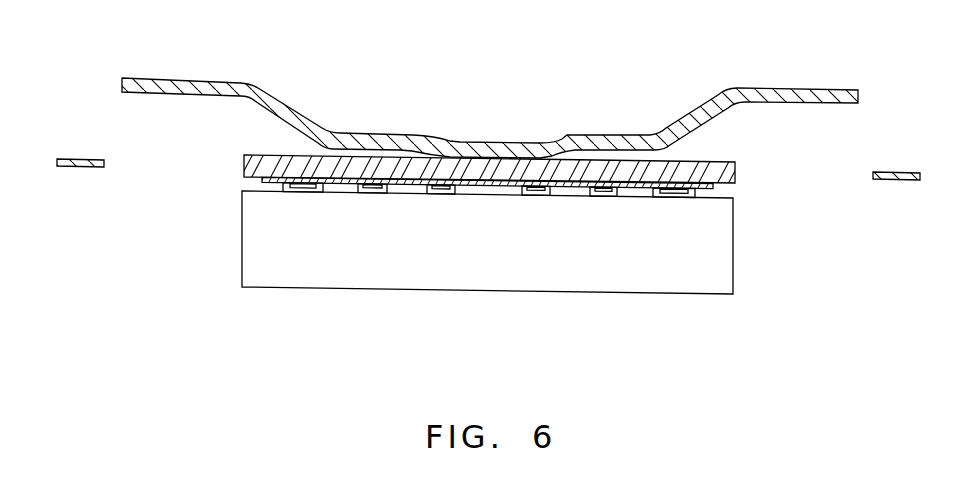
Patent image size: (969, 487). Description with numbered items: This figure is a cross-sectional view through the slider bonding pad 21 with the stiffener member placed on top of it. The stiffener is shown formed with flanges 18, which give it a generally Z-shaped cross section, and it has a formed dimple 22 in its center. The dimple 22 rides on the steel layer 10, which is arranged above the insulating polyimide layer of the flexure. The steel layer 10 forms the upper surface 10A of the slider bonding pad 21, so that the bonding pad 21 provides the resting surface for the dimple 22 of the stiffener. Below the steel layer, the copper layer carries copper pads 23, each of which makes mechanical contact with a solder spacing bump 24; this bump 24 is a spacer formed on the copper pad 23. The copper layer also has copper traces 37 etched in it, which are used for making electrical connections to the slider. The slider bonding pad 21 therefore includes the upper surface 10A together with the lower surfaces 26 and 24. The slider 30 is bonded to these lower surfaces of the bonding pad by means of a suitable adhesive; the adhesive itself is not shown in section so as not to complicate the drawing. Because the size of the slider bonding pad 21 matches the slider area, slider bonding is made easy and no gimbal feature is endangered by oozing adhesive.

The flanges 18 is at (282, 100).
The dimple 22 is at (430, 138).
The steel layer 10 is at (348, 162).
The upper surface 10A is at (737, 163).
The slider bonding pad 21 is at (500, 209).
The copper pads 23 is at (297, 192).
The solder spacing bump 24 is at (378, 193).
The lower surface 26 is at (500, 187).
The copper traces 37 is at (613, 192).
The slider 30 is at (733, 244).